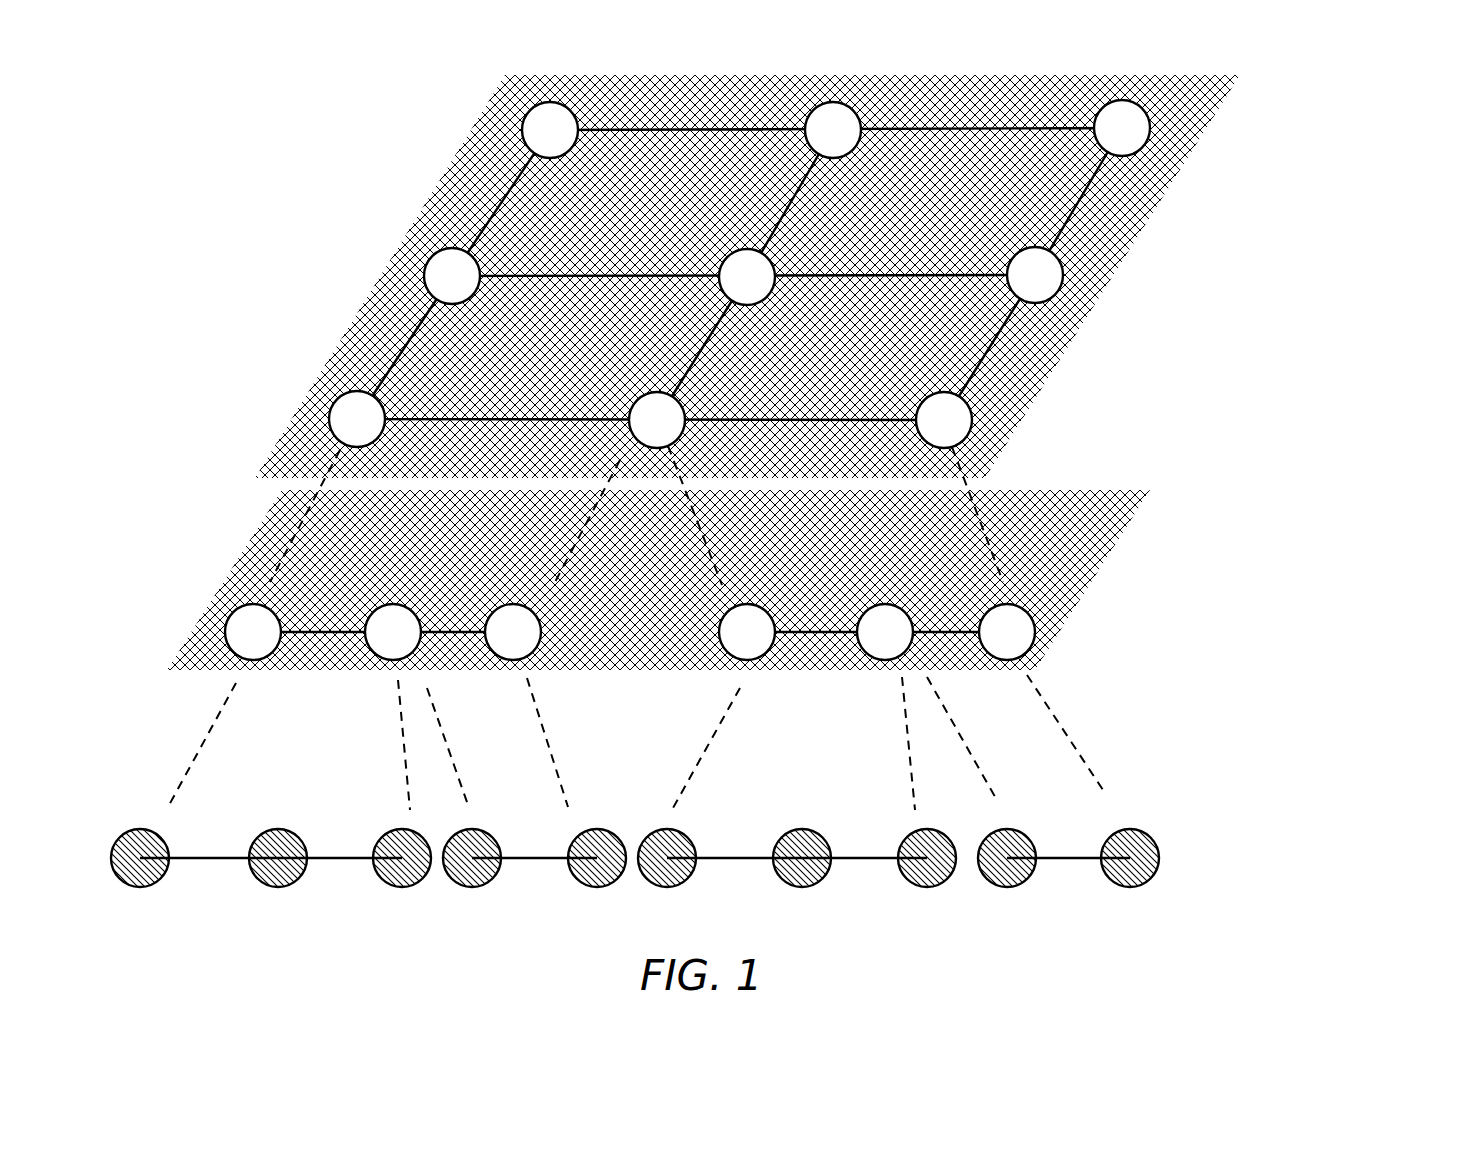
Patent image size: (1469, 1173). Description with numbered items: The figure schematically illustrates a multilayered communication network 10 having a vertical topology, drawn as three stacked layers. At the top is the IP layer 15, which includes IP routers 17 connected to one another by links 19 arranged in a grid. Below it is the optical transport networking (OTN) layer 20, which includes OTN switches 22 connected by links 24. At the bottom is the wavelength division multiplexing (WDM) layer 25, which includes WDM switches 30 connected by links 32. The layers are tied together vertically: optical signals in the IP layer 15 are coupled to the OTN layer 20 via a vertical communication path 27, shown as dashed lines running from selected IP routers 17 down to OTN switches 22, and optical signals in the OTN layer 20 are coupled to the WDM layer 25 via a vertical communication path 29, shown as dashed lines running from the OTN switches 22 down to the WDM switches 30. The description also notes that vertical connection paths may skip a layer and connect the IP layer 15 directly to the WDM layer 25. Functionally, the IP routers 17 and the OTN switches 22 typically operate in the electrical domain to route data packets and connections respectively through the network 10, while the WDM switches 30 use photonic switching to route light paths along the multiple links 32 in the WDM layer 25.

The multilayered communication network 10 is at (403, 195).
The IP layer 15 is at (1113, 300).
The IP routers 17 is at (522, 132).
The links 19 is at (998, 130).
The OTN layer 20 is at (1072, 597).
The OTN switches 22 is at (226, 632).
The links 24 is at (937, 628).
The WDM layer 25 is at (1182, 858).
The vertical communication path 27 is at (300, 516).
The vertical communication path 29 is at (210, 728).
The WDM switches 30 is at (280, 886).
The links 32 is at (727, 856).